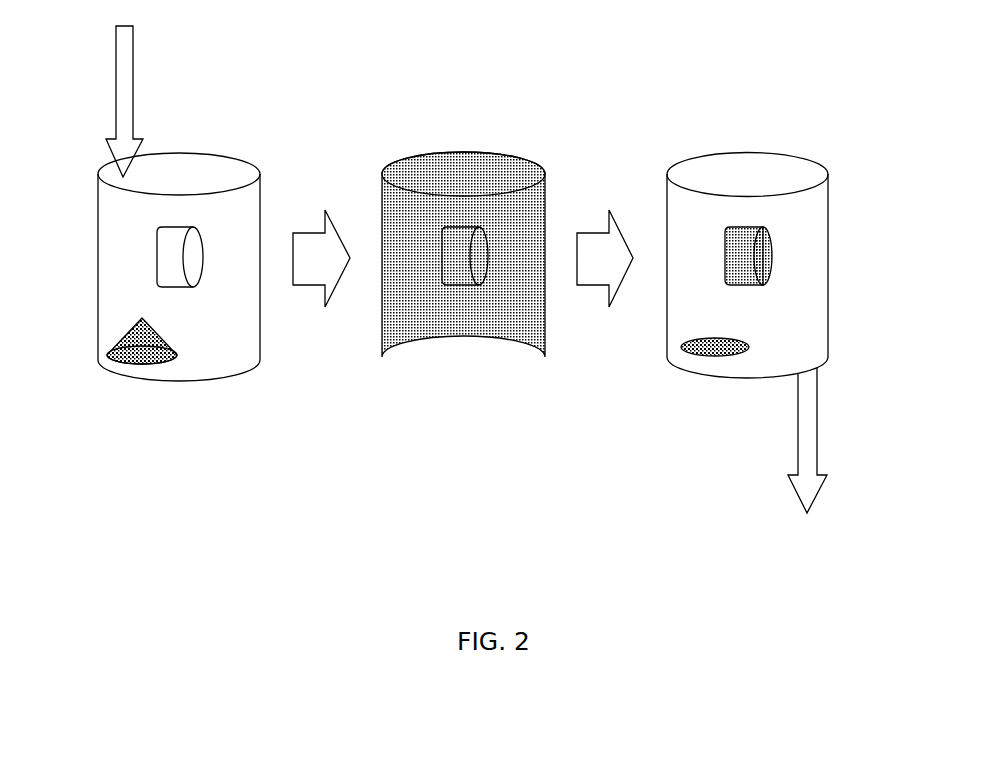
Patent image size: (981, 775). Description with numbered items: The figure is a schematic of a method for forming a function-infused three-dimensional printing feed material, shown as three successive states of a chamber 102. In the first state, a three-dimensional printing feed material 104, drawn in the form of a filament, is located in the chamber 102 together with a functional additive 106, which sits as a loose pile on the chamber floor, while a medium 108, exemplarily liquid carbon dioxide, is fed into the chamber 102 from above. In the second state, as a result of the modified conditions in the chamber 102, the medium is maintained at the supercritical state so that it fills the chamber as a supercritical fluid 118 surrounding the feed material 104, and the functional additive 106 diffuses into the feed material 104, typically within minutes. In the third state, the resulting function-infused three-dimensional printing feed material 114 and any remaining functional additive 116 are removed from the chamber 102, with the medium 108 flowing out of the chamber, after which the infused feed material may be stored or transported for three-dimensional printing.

The chamber 102 is at (220, 172).
The three-dimensional printing feed material 104 is at (167, 252).
The functional additive 106 is at (136, 326).
The medium 108 is at (133, 67).
The function-infused three-dimensional printing feed material 114 is at (742, 243).
The remaining functional additive 116 is at (715, 355).
The supercritical fluid 118 is at (420, 345).